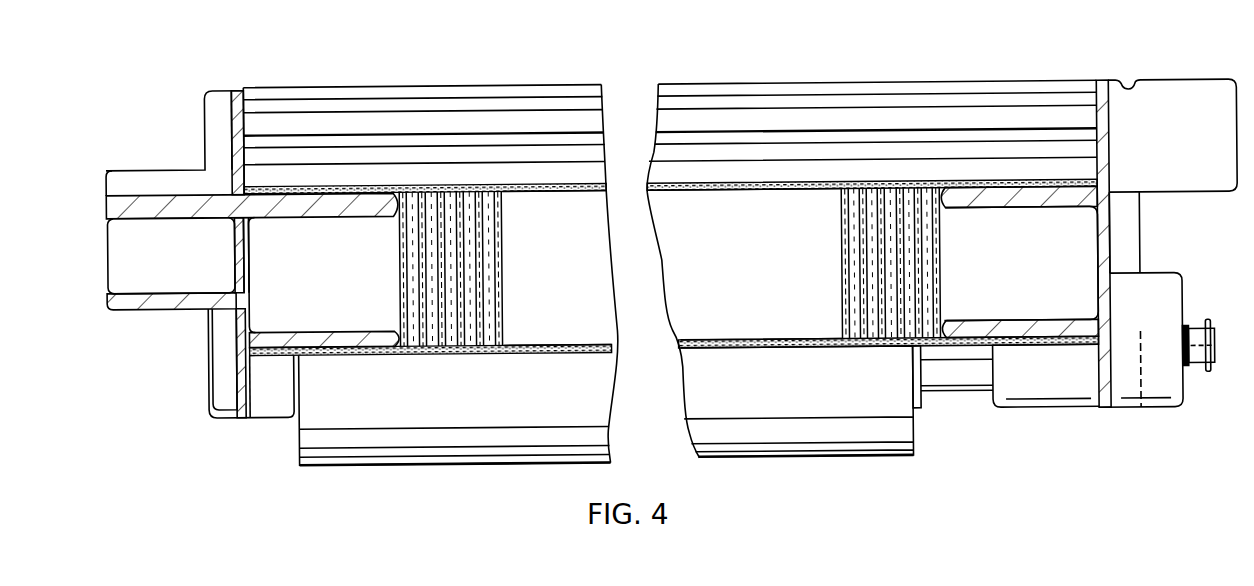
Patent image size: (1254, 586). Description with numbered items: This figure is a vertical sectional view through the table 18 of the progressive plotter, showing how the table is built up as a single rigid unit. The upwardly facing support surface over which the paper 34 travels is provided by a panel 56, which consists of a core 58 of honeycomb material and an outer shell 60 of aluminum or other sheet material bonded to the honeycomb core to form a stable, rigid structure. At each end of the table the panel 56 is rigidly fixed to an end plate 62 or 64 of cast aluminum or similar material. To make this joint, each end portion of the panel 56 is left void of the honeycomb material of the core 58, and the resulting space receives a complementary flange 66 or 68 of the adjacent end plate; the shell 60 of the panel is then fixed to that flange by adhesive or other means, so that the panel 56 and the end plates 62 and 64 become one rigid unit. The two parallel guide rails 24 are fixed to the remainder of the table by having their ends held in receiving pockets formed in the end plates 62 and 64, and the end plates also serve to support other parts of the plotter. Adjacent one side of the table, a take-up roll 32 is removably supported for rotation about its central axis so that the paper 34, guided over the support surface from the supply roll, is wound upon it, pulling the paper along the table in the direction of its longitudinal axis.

The table 18 is at (1103, 79).
The guide rail 24 is at (430, 85).
The take-up roll 32 is at (528, 466).
The paper 34 is at (575, 186).
The panel 56 is at (761, 183).
The core 58 is at (838, 205).
The outer shell 60 is at (780, 348).
The end plate 62 is at (1127, 79).
The end plate 64 is at (228, 89).
The flange 66 is at (970, 194).
The flange 68 is at (320, 216).